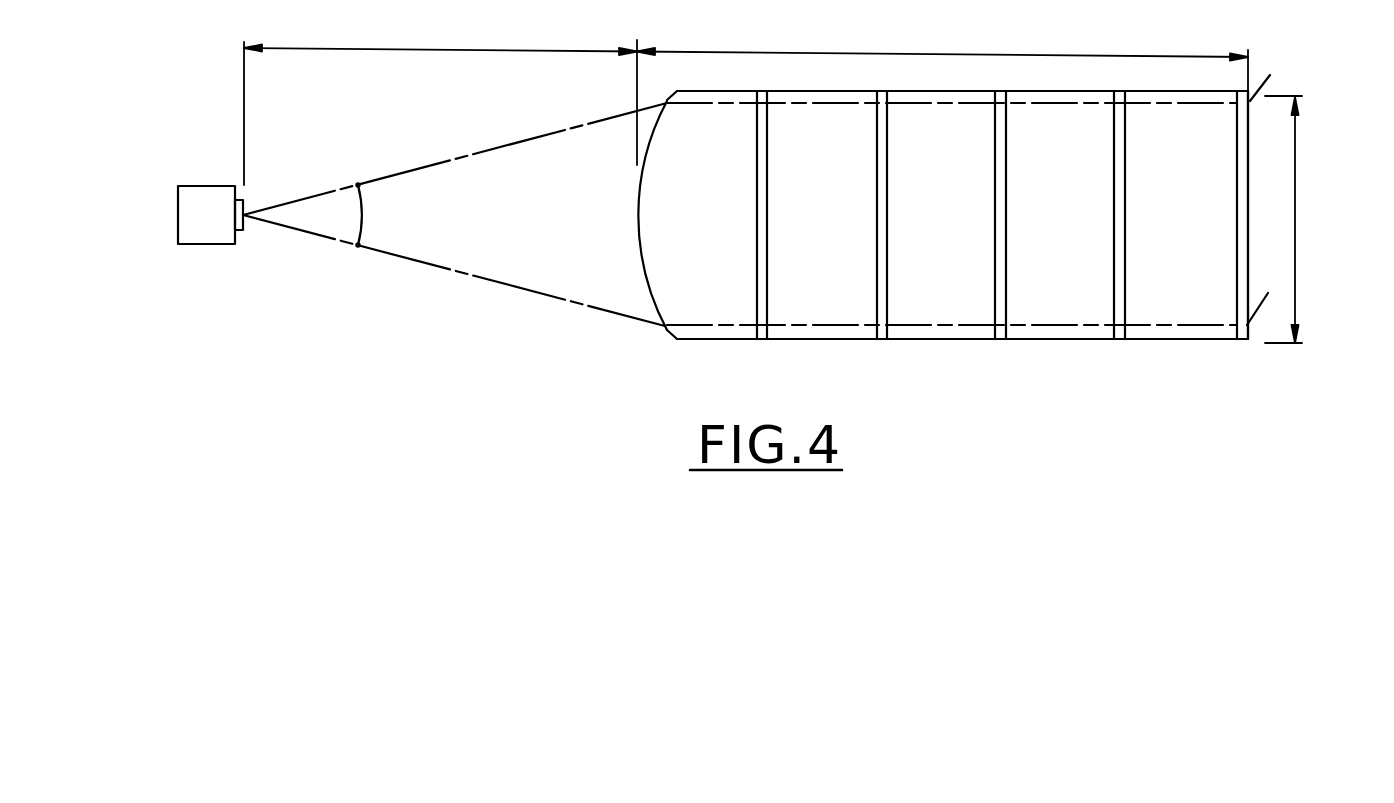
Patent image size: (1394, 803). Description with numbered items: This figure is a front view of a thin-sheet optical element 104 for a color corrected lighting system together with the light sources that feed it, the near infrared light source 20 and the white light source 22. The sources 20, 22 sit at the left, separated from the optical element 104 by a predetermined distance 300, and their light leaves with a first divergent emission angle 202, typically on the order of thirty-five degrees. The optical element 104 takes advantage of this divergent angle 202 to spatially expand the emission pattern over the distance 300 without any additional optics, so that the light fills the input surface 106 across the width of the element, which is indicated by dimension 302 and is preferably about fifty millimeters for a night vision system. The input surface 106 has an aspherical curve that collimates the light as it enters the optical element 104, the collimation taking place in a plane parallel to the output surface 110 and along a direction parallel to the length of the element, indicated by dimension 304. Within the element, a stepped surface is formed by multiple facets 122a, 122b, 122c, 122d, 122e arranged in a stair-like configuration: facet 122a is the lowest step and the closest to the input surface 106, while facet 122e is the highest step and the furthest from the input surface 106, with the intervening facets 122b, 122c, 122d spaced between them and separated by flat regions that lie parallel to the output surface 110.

The near infrared light source 20 is at (186, 251).
The white light source 22 is at (212, 244).
The first divergent emission angle 202 is at (367, 217).
The optical element 104 is at (894, 209).
The input surface 106 is at (630, 250).
The output surface 110 is at (660, 198).
The facet 122a is at (767, 338).
The facet 122b is at (887, 339).
The facet 122c is at (1006, 340).
The facet 122d is at (1127, 337).
The facet 122e is at (1243, 340).
The predetermined distance 300 is at (440, 103).
The length dimension 304 is at (942, 56).
The width dimension 302 is at (1300, 210).